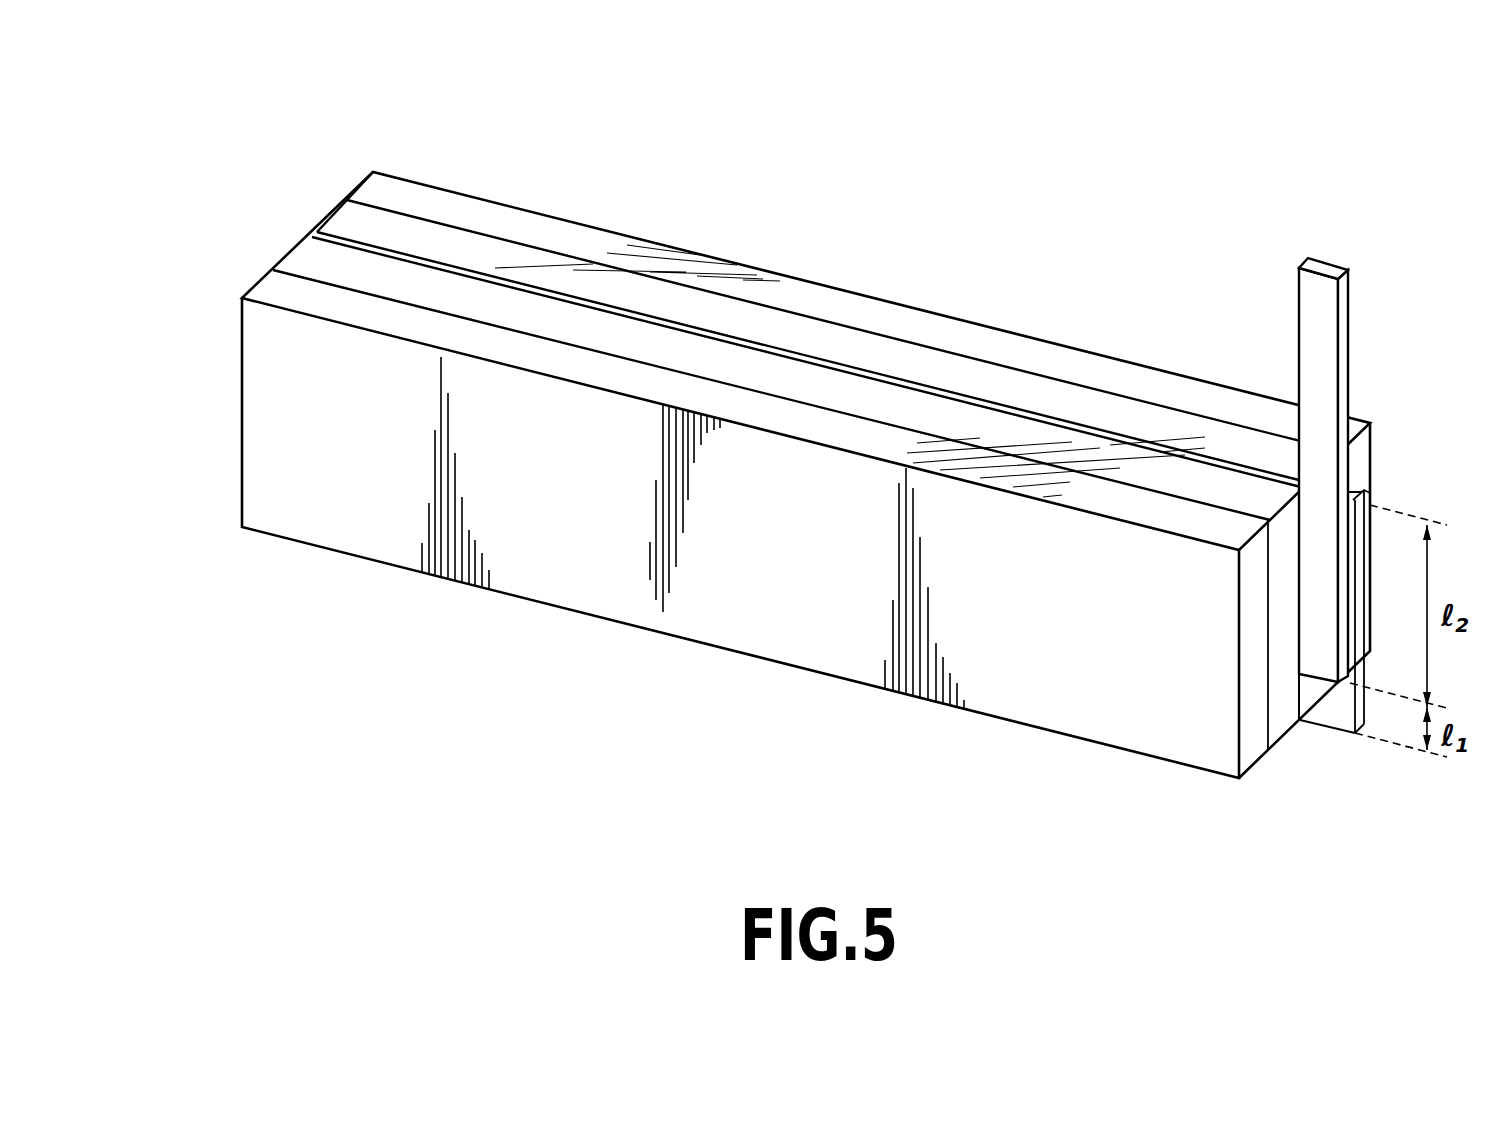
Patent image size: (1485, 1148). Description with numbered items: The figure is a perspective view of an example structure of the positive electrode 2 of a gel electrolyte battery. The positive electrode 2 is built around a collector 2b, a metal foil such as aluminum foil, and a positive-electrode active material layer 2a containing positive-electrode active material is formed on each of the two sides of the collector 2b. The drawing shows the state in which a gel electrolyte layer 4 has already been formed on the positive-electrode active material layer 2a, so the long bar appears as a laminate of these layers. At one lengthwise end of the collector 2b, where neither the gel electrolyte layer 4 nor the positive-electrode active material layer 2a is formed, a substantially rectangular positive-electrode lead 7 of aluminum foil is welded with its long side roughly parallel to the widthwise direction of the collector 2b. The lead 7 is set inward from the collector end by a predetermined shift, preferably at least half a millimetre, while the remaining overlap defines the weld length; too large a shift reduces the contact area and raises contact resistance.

The positive electrode 2 is at (872, 265).
The positive-electrode active material layer 2a is at (340, 217).
The collector 2b is at (313, 232).
The gel electrolyte layer 4 is at (370, 187).
The positive-electrode lead 7 is at (1325, 300).